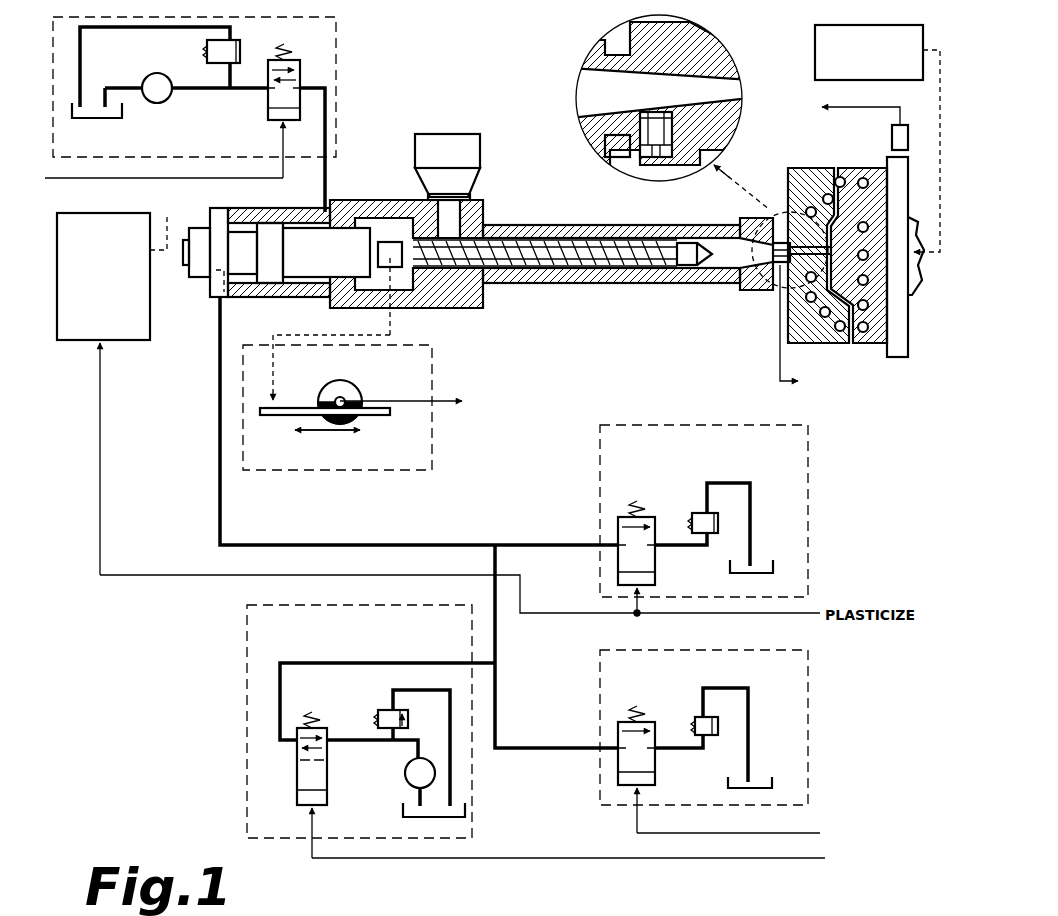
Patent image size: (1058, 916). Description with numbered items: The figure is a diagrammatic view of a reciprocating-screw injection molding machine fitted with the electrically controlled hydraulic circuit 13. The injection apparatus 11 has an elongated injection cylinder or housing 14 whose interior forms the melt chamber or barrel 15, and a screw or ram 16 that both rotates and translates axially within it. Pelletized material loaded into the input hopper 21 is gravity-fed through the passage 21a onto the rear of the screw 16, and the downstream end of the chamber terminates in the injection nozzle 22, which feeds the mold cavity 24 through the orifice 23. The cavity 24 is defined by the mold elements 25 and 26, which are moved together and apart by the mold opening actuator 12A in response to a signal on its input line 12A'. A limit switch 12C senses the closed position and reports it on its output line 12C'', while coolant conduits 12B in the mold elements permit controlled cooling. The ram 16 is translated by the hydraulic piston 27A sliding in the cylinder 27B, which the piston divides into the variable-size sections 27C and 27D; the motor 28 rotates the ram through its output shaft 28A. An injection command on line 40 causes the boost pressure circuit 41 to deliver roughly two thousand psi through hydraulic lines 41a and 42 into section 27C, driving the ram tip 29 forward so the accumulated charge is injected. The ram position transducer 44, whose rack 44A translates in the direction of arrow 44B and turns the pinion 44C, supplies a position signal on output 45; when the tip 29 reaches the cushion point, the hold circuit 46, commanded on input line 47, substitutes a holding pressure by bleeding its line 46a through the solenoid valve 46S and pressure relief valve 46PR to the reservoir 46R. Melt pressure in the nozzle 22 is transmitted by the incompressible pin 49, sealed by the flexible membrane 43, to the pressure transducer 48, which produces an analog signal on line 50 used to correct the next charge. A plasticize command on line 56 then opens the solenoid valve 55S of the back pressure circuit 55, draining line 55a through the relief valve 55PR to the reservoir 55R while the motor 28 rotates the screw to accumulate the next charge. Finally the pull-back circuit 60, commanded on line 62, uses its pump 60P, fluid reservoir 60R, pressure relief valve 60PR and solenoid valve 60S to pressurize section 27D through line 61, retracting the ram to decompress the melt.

The injection apparatus 11 is at (592, 208).
The mold opening actuator 12A is at (856, 138).
The input line 12A' is at (789, 88).
The conduits 12B is at (862, 178).
The limit switch 12C is at (880, 136).
The output line 12C'' is at (865, 105).
The electrically controlled hydraulic circuit 13 is at (135, 607).
The injection cylinder 14 is at (600, 284).
The melt chamber 15 is at (718, 270).
The screw 16 is at (617, 238).
The input hopper 21 is at (478, 156).
The passage 21a is at (468, 218).
The injection nozzle 22 is at (773, 212).
The orifice 23 is at (782, 300).
The mold cavity 24 is at (836, 240).
The mold element 25 is at (800, 330).
The mold element 26 is at (880, 335).
The hydraulic piston 27A is at (281, 262).
The cylinder 27B is at (268, 286).
The cylinder section 27C is at (238, 276).
The cylinder section 27D is at (300, 292).
The motor 28 is at (118, 212).
The output shaft 28A is at (167, 238).
The ram tip 29 is at (738, 240).
The injection command line 40 is at (690, 866).
The boost pressure circuit 41 is at (242, 633).
The hydraulic line 41a is at (495, 665).
The hydraulic line 42 is at (282, 545).
The flexible membrane 43 is at (662, 112).
The ram position transducer 44 is at (379, 415).
The rack 44A is at (291, 408).
The arrow 44B is at (375, 440).
The pinion 44C is at (348, 400).
The output line 45 is at (456, 393).
The hold circuit 46 is at (726, 740).
The output line 46a is at (523, 758).
The pressure relief valve 46PR is at (718, 740).
The hydraulic fluid reservoir 46R is at (780, 785).
The solenoid valve 46S is at (616, 784).
The input line 47 is at (740, 833).
The pressure transducer 48 is at (626, 150).
The incompressible pin 49 is at (640, 120).
The output line 50 is at (778, 382).
The back pressure circuit 55 is at (729, 520).
The output line 55a is at (536, 545).
The pressure relief valve 55PR is at (722, 522).
The reservoir 55R is at (733, 578).
The solenoid valve 55S is at (616, 573).
The input line 56 is at (690, 620).
The pull-back circuit 60 is at (248, 87).
The pump 60P is at (158, 104).
The pressure relief valve 60PR is at (205, 48).
The fluid reservoir 60R is at (93, 108).
The solenoid valve 60S is at (305, 102).
The hydraulic line 61 is at (332, 180).
The input line 62 is at (240, 181).